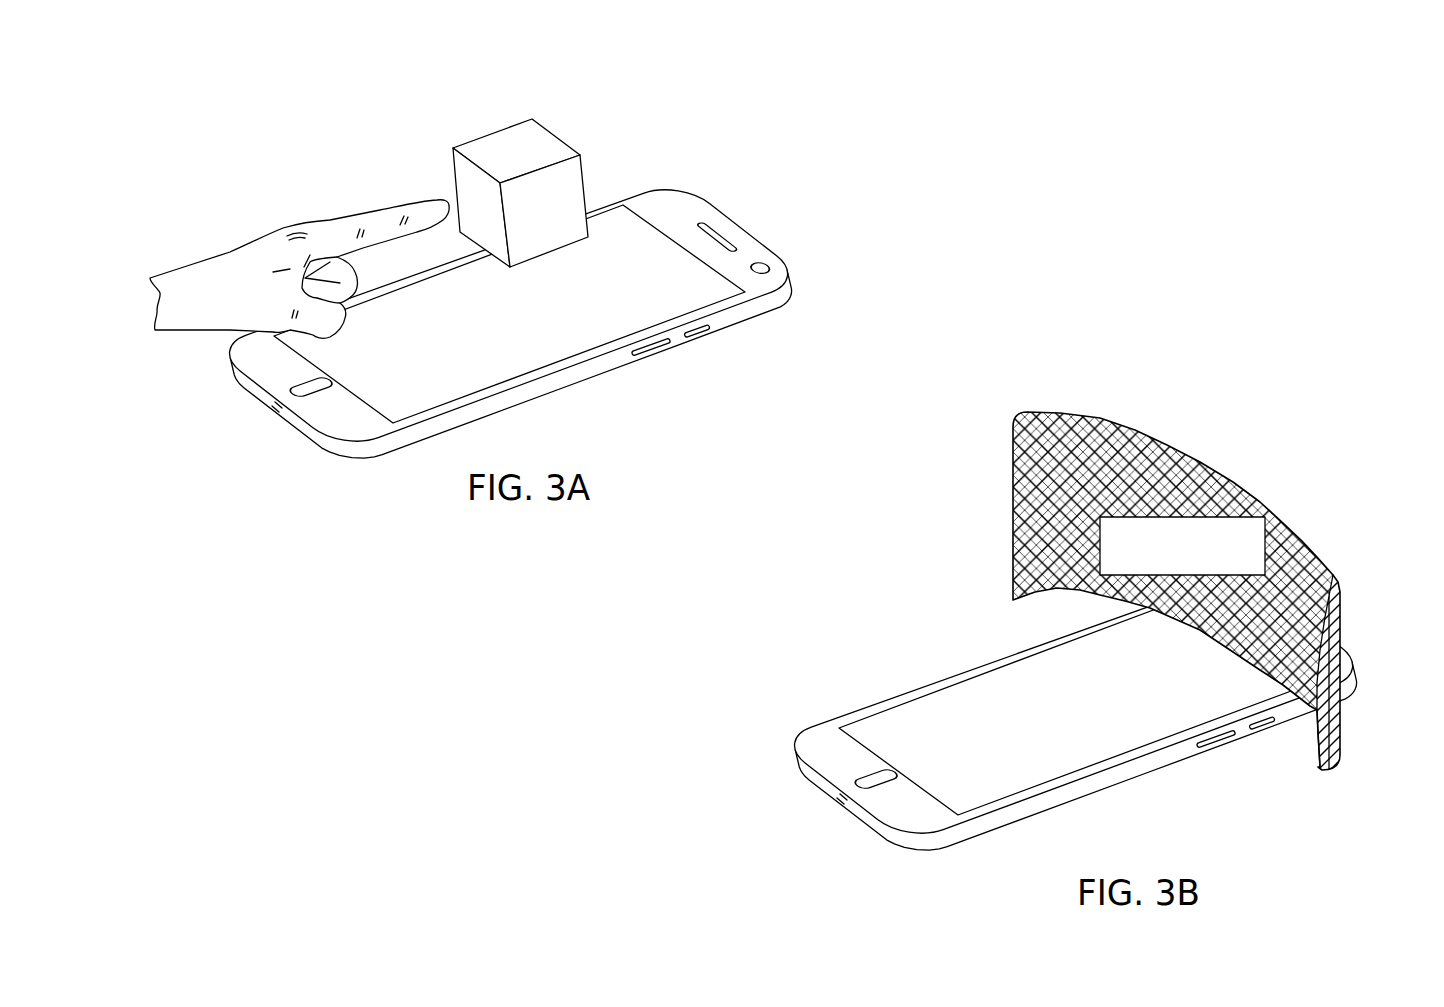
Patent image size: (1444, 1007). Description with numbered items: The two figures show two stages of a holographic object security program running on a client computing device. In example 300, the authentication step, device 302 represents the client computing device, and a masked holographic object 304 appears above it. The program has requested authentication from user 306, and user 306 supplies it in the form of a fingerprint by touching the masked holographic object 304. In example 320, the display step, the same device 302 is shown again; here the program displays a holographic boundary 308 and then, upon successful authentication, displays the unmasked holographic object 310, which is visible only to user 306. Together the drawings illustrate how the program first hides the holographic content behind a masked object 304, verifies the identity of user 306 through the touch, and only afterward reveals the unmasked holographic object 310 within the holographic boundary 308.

In FIG. 3A, the example of an authentication step 300 is at (822, 107).
In FIG. 3A, the device 302 is at (762, 244).
In FIG. 3B, the device 302 is at (960, 670).
In FIG. 3A, the masked holographic object 304 is at (553, 133).
In FIG. 3A, the user 306 is at (238, 246).
In FIG. 3B, the holographic boundary 308 is at (1013, 480).
In FIG. 3B, the unmasked holographic object 310 is at (1217, 512).
In FIG. 3B, the example of a display step 320 is at (1305, 387).